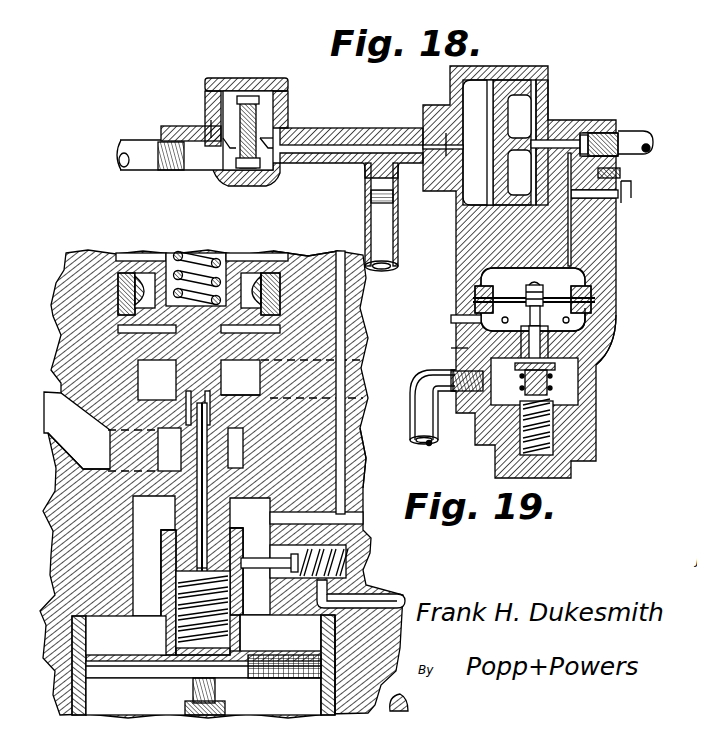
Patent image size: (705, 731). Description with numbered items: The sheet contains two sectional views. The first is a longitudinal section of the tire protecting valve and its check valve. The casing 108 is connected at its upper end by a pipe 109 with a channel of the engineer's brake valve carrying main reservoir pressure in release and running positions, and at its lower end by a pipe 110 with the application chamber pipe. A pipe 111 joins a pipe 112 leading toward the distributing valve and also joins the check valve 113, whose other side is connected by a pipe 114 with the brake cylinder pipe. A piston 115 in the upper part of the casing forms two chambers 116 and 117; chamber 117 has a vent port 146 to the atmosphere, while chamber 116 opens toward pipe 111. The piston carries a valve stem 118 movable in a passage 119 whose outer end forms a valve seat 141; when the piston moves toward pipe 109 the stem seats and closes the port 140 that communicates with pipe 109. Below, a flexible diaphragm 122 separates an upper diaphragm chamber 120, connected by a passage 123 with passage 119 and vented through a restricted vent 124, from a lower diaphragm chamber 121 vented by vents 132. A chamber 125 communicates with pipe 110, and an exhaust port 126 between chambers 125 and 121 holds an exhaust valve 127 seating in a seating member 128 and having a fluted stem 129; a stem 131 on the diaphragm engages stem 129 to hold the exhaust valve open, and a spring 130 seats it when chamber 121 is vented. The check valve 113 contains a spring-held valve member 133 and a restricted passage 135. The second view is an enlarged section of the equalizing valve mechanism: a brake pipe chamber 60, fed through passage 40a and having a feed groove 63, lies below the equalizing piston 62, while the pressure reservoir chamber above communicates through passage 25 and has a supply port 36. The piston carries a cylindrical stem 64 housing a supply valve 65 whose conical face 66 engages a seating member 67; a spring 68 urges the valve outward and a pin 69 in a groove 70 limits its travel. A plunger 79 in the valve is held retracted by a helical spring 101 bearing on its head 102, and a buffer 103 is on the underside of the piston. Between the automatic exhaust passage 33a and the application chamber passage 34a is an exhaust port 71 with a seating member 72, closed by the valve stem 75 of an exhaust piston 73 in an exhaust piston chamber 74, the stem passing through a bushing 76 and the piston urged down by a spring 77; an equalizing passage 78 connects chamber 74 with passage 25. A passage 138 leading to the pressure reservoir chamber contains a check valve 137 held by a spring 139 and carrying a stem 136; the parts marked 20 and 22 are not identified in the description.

In FIG. 18, the tire protecting valve casing 108 is at (443, 233).
In FIG. 18, the pipe 109 is at (624, 126).
In FIG. 18, the pipe 110 is at (412, 419).
In FIG. 18, the pipe 111 is at (388, 121).
In FIG. 18, the pipe 112 is at (362, 228).
In FIG. 18, the check valve 113 is at (294, 91).
In FIG. 18, the pipe 114 is at (131, 163).
In FIG. 18, the piston 115 is at (485, 74).
In FIG. 18, the chamber 116 is at (477, 142).
In FIG. 18, the chamber 117 is at (508, 104).
In FIG. 18, the valve stem 118 is at (578, 124).
In FIG. 18, the passage 119 is at (612, 164).
In FIG. 18, the upper diaphragm chamber 120 is at (533, 277).
In FIG. 18, the lower diaphragm chamber 121 is at (595, 316).
In FIG. 18, the flexible diaphragm 122 is at (470, 307).
In FIG. 18, the passage 123 is at (603, 228).
In FIG. 18, the restricted vent 124 is at (620, 192).
In FIG. 18, the chamber 125 is at (567, 380).
In FIG. 18, the exhaust port 126 is at (455, 342).
In FIG. 18, the exhaust valve 127 is at (567, 362).
In FIG. 18, the seating member 128 is at (567, 352).
In FIG. 18, the fluted stem 129 is at (603, 341).
In FIG. 18, the spring 130 is at (530, 450).
In FIG. 18, the stem 131 is at (520, 310).
In FIG. 18, the vents 132 is at (472, 312).
In FIG. 18, the valve member 133 is at (232, 144).
In FIG. 18, the restricted passage 135 is at (262, 133).
In FIG. 18, the spring 139 is at (203, 112).
In FIG. 19, the spring 139 is at (342, 551).
In FIG. 18, the port 140 is at (582, 126).
In FIG. 18, the valve seat 141 is at (600, 147).
In FIG. 18, the vent port 146 is at (537, 84).
In FIG. 19, the housing 20 is at (52, 274).
In FIG. 19, the cylinder wall 22 is at (312, 243).
In FIG. 19, the passage 25 is at (345, 512).
In FIG. 19, the automatic exhaust passage 33a is at (240, 385).
In FIG. 19, the application chamber passage 34a is at (77, 430).
In FIG. 19, the supply port 36 is at (200, 525).
In FIG. 19, the passage 40a is at (406, 693).
In FIG. 19, the brake pipe chamber 60 is at (284, 679).
In FIG. 19, the equalizing piston 62 is at (112, 662).
In FIG. 19, the feed groove 63 is at (314, 628).
In FIG. 19, the cylindrical stem 64 is at (157, 542).
In FIG. 19, the supply valve 65 is at (175, 511).
In FIG. 19, the conical face 66 is at (214, 498).
In FIG. 19, the seating member 67 is at (157, 492).
In FIG. 19, the spring 68 is at (157, 617).
In FIG. 19, the pin 69 is at (245, 571).
In FIG. 19, the longitudinal groove 70 is at (228, 512).
In FIG. 19, the automatic exhaust port 71 is at (172, 398).
In FIG. 19, the valve seating member 72 is at (107, 433).
In FIG. 19, the exhaust piston 73 is at (126, 253).
In FIG. 19, the exhaust piston chamber 74 is at (237, 244).
In FIG. 19, the valve stem 75 is at (240, 377).
In FIG. 19, the bushing 76 is at (157, 380).
In FIG. 19, the spring 77 is at (176, 248).
In FIG. 19, the equalizing passage 78 is at (353, 459).
In FIG. 19, the plunger 79 is at (190, 553).
In FIG. 19, the helical spring 101 is at (233, 620).
In FIG. 19, the head 102 is at (233, 640).
In FIG. 19, the buffer 103 is at (210, 702).
In FIG. 19, the stem 136 is at (255, 561).
In FIG. 19, the check valve 137 is at (316, 519).
In FIG. 19, the passage 138 is at (374, 590).